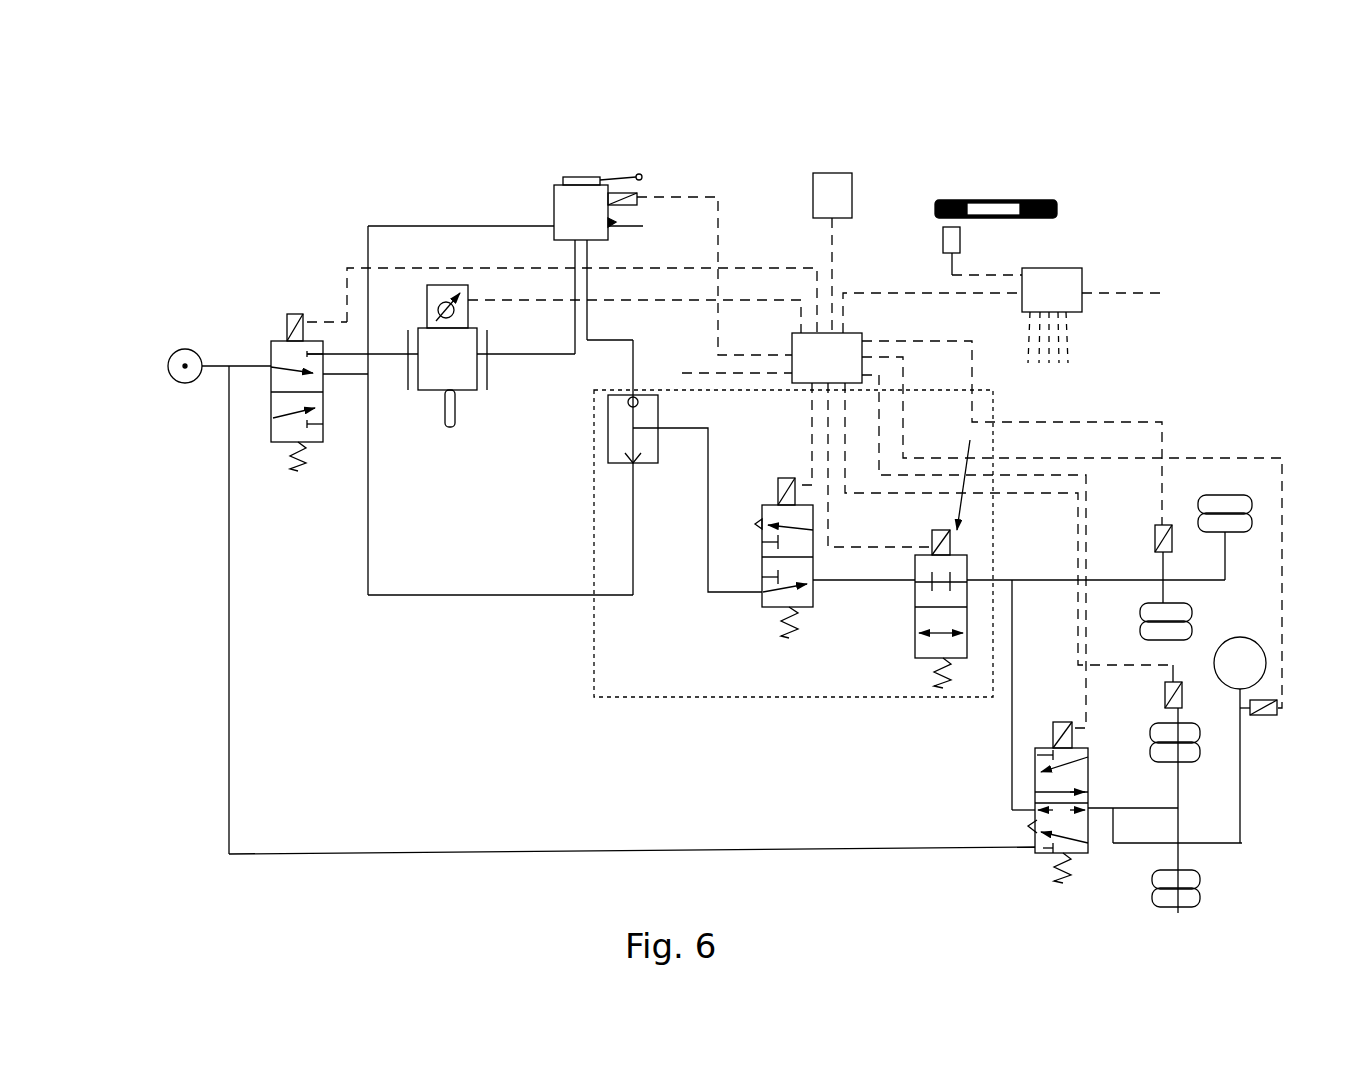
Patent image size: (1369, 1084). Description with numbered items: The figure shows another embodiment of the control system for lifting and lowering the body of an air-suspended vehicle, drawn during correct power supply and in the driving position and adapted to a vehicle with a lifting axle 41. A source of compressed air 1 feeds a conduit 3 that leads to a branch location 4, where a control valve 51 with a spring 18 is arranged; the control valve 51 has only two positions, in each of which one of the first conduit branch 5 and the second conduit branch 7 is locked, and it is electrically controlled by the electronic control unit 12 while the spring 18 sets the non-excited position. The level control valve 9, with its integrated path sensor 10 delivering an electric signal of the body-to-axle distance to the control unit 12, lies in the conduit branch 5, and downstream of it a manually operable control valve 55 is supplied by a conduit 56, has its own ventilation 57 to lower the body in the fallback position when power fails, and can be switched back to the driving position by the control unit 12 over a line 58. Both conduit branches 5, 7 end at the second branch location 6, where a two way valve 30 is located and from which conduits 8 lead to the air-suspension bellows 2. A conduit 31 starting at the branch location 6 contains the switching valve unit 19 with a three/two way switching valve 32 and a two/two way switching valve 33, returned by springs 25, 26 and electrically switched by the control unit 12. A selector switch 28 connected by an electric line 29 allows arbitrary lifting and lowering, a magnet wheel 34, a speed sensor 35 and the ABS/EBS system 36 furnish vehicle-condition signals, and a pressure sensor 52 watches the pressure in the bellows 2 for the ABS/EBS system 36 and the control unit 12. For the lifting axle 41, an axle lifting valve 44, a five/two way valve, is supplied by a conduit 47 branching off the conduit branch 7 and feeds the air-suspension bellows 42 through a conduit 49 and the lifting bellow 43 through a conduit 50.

The source of compressed air 1 is at (185, 366).
The air-suspension bellows 2 is at (1228, 502).
The conduit 3 is at (212, 367).
The branch location 4 is at (275, 313).
The first conduit branch 5 is at (337, 354).
The second branch location 6 is at (636, 428).
The second conduit branch 7 is at (465, 598).
The conduits 8 is at (1225, 558).
The level control valve 9 is at (417, 322).
The path sensor 10 is at (432, 282).
The electronic control unit 12 is at (812, 348).
The spring 18 is at (235, 472).
The switching valve unit 19 is at (822, 526).
The spring 25 is at (786, 638).
The spring 26 is at (943, 688).
The selector switch 28 is at (832, 190).
The electric line 29 is at (835, 243).
The two way valve 30 is at (589, 522).
The conduit 31 is at (723, 595).
The switching valve 32 is at (747, 647).
The switching valve 33 is at (923, 601).
The magnet wheel 34 is at (1040, 200).
The speed sensor 35 is at (958, 191).
The antilock system and electronic brake system 36 is at (1063, 280).
The lifting axle 41 is at (1178, 800).
The air-suspension bellows 42 is at (1167, 755).
The lifting bellow 43 is at (1250, 665).
The axle lifting valve 44 is at (1014, 832).
The conduit 47 is at (813, 850).
The conduit 49 is at (1113, 843).
The conduit 50 is at (1227, 845).
The control valve 51 is at (270, 368).
The pressure sensor 52 is at (1168, 525).
The control valve 55 is at (563, 210).
The conduit 56 is at (493, 226).
The ventilation 57 is at (643, 226).
The line 58 is at (678, 197).